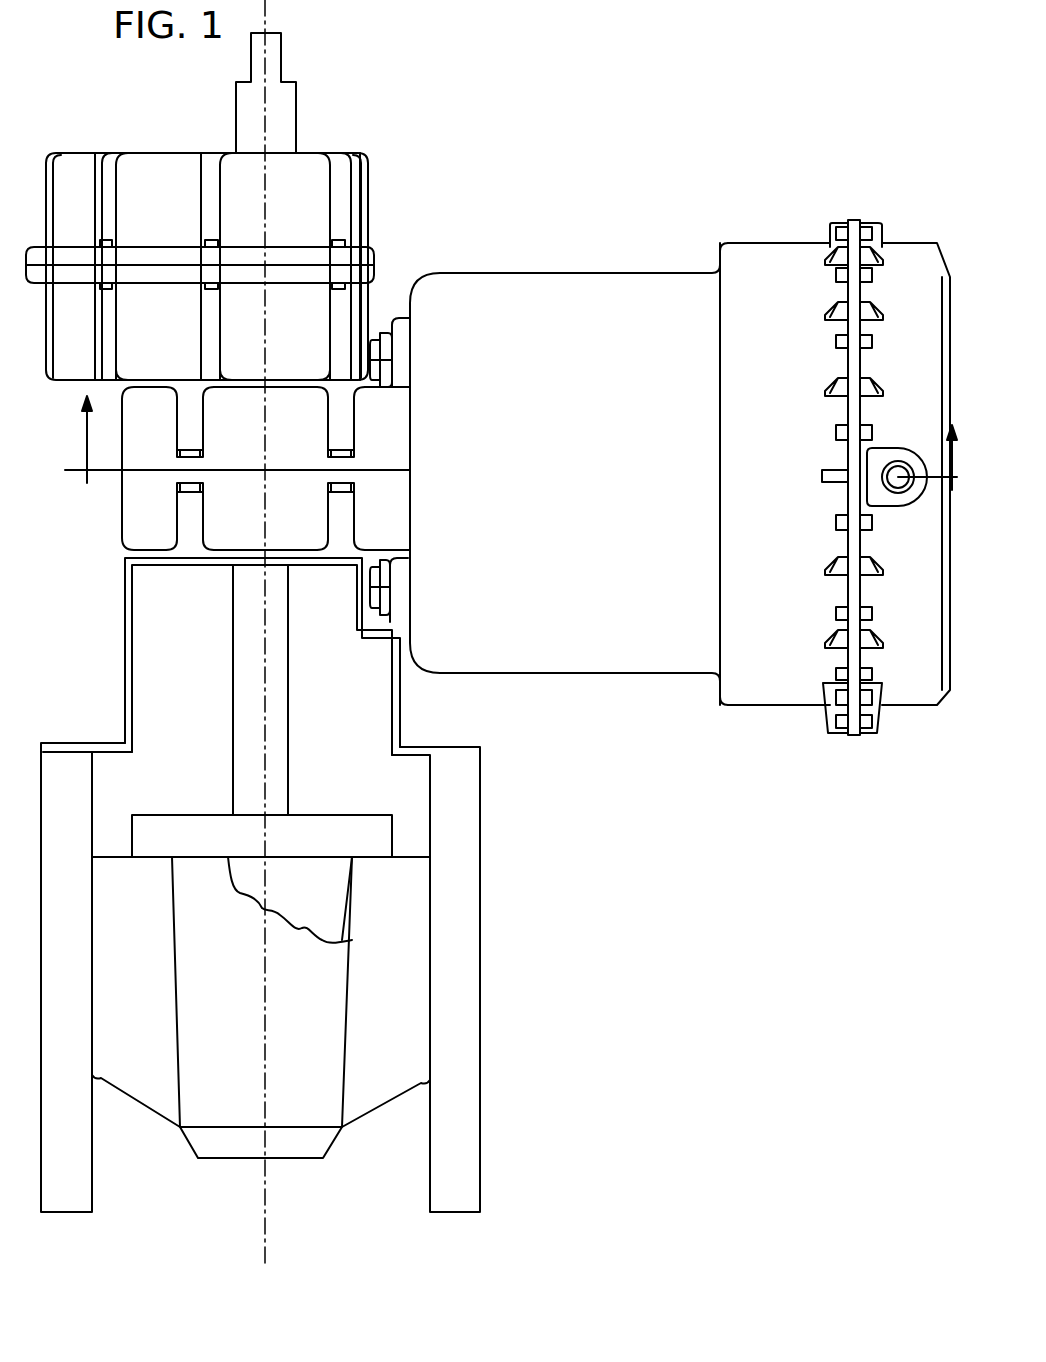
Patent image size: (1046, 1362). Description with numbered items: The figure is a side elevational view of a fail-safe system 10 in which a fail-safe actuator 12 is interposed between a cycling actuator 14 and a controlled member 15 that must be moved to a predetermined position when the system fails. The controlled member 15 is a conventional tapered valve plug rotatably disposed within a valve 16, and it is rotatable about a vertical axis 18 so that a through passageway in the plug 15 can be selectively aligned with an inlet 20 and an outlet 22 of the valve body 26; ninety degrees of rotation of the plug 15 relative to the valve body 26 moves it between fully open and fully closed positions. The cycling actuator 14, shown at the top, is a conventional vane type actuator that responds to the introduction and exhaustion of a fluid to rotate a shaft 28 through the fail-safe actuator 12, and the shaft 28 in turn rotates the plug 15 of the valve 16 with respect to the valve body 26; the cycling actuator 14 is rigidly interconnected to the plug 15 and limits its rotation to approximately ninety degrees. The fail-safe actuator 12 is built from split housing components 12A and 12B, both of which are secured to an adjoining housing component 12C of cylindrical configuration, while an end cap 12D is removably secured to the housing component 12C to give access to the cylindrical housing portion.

The fail-safe system 10 is at (447, 238).
The fail-safe actuator 12 is at (111, 524).
The split housing component 12A is at (302, 451).
The split housing component 12B is at (302, 531).
The housing component 12C is at (553, 469).
The end cap 12D is at (929, 349).
The cycling actuator 14 is at (290, 344).
The controlled member 15 is at (325, 899).
The valve 16 is at (505, 918).
The axis 18 is at (265, 98).
The inlet 20 is at (42, 975).
The outlet 22 is at (480, 985).
The valve body 26 is at (400, 949).
The shaft 28 is at (291, 715).